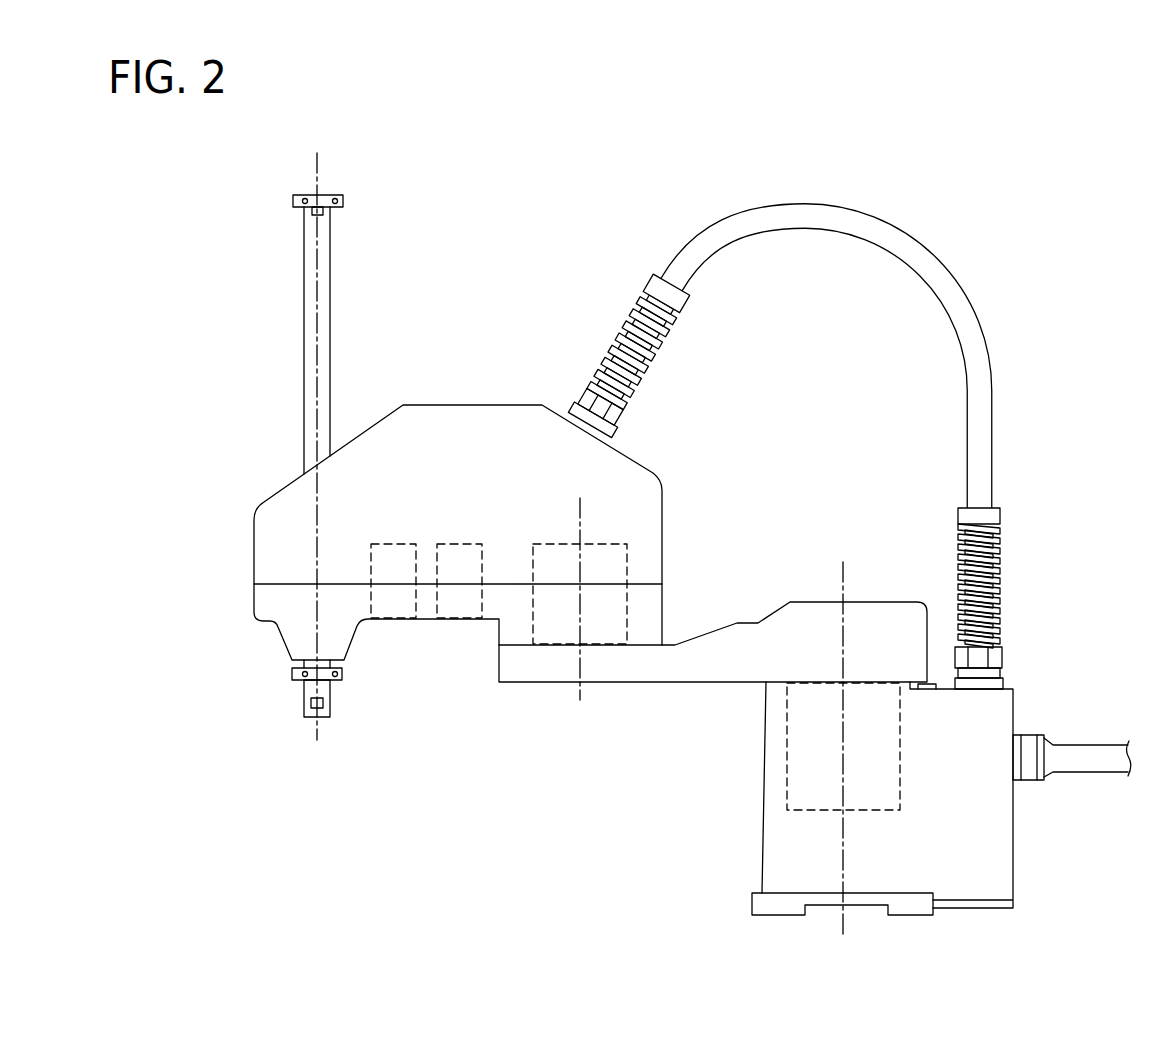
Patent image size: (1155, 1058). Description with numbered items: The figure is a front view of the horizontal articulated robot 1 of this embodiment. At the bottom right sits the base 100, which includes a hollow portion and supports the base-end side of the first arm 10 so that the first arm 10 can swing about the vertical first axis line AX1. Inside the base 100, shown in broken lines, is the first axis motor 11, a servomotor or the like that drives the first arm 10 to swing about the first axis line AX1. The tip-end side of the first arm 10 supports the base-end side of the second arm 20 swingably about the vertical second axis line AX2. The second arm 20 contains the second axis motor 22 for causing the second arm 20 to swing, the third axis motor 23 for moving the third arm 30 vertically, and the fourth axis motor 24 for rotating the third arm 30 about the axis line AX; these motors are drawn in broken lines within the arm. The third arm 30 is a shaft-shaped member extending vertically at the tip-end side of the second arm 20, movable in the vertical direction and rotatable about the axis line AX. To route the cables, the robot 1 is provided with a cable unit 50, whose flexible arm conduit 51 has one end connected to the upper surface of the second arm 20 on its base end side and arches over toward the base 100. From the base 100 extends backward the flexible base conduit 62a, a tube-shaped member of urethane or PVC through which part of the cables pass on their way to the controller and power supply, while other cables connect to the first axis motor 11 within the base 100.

The horizontal articulated robot 1 is at (494, 158).
The first arm 10 is at (878, 602).
The first axis motor 11 is at (787, 757).
The second arm 20 is at (467, 405).
The second axis motor 22 is at (628, 560).
The third axis motor 23 is at (483, 600).
The fourth axis motor 24 is at (414, 600).
The third arm 30 is at (304, 262).
The cable unit 50 is at (834, 398).
The arm conduit 51 is at (812, 204).
The base conduit 62a is at (1085, 740).
The base 100 is at (762, 845).
The axis line AX is at (319, 490).
The first axis line AX1 is at (845, 850).
The second axis line AX2 is at (580, 510).